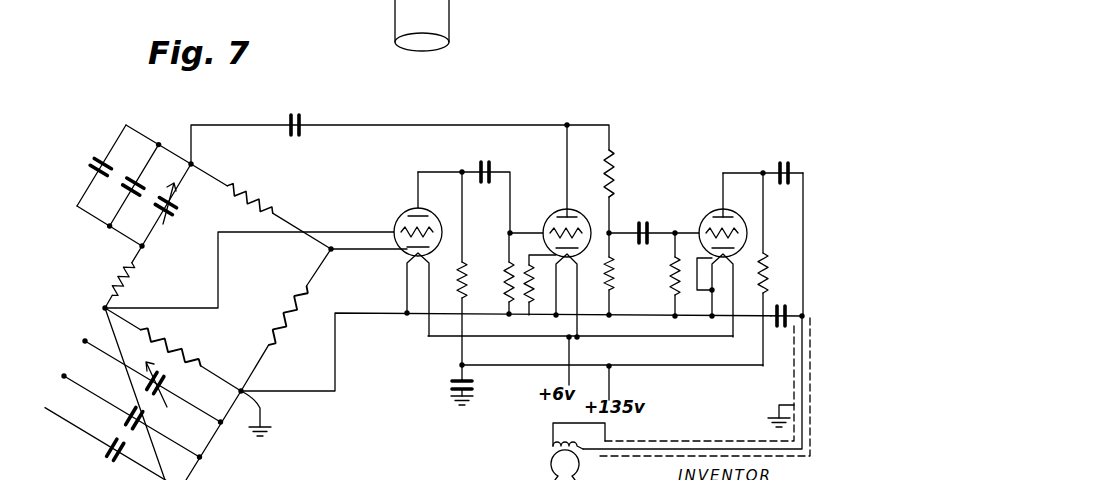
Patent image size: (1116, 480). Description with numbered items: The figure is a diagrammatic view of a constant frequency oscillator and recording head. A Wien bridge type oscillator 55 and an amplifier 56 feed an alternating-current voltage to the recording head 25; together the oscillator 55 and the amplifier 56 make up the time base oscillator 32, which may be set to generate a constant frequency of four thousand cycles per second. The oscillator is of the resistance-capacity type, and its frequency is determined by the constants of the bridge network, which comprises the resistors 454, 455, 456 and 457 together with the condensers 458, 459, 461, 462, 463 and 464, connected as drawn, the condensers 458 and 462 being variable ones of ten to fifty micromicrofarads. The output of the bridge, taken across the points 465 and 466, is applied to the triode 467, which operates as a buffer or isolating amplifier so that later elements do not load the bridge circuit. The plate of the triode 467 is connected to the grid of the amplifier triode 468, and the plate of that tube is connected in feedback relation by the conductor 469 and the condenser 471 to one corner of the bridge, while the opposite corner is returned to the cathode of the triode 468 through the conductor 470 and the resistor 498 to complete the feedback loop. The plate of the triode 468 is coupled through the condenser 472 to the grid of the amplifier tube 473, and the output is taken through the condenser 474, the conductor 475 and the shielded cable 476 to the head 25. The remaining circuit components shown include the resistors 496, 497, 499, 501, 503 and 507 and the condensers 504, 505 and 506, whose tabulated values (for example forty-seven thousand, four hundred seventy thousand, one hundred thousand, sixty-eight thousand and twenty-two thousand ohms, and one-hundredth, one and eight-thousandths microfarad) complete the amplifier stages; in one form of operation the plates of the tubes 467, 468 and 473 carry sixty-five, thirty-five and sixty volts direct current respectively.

The recording head 25 is at (551, 470).
The time base oscillator 32 is at (355, 471).
The Wien bridge type oscillator 55 is at (377, 387).
The amplifier 56 is at (726, 172).
The resistor 454 is at (297, 304).
The resistor 455 is at (262, 198).
The resistor 456 is at (128, 263).
The resistor 457 is at (184, 353).
The condenser 458 is at (173, 183).
The condenser 459 is at (127, 193).
The condenser 461 is at (92, 174).
The condenser 462 is at (150, 381).
The condenser 463 is at (126, 416).
The condenser 464 is at (105, 446).
The bridge output point 465 is at (103, 308).
The bridge output point 466 is at (329, 251).
The triode 467 is at (394, 222).
The amplifier triode 468 is at (553, 212).
The conductor 469 is at (421, 125).
The conductor 470 is at (352, 312).
The condenser 471 is at (286, 121).
The condenser 472 is at (645, 224).
The amplifier tube 473 is at (712, 212).
The condenser 474 is at (785, 163).
The conductor 475 is at (803, 234).
The shielded cable 476 is at (668, 436).
The resistor 496 is at (463, 270).
The resistor 497 is at (506, 283).
The resistor 498 is at (533, 304).
The resistor 499 is at (617, 176).
The resistor 501 is at (614, 281).
The resistor 503 is at (767, 286).
The condenser 504 is at (488, 170).
The condenser 505 is at (452, 392).
The condenser 506 is at (779, 327).
The resistor 507 is at (670, 289).